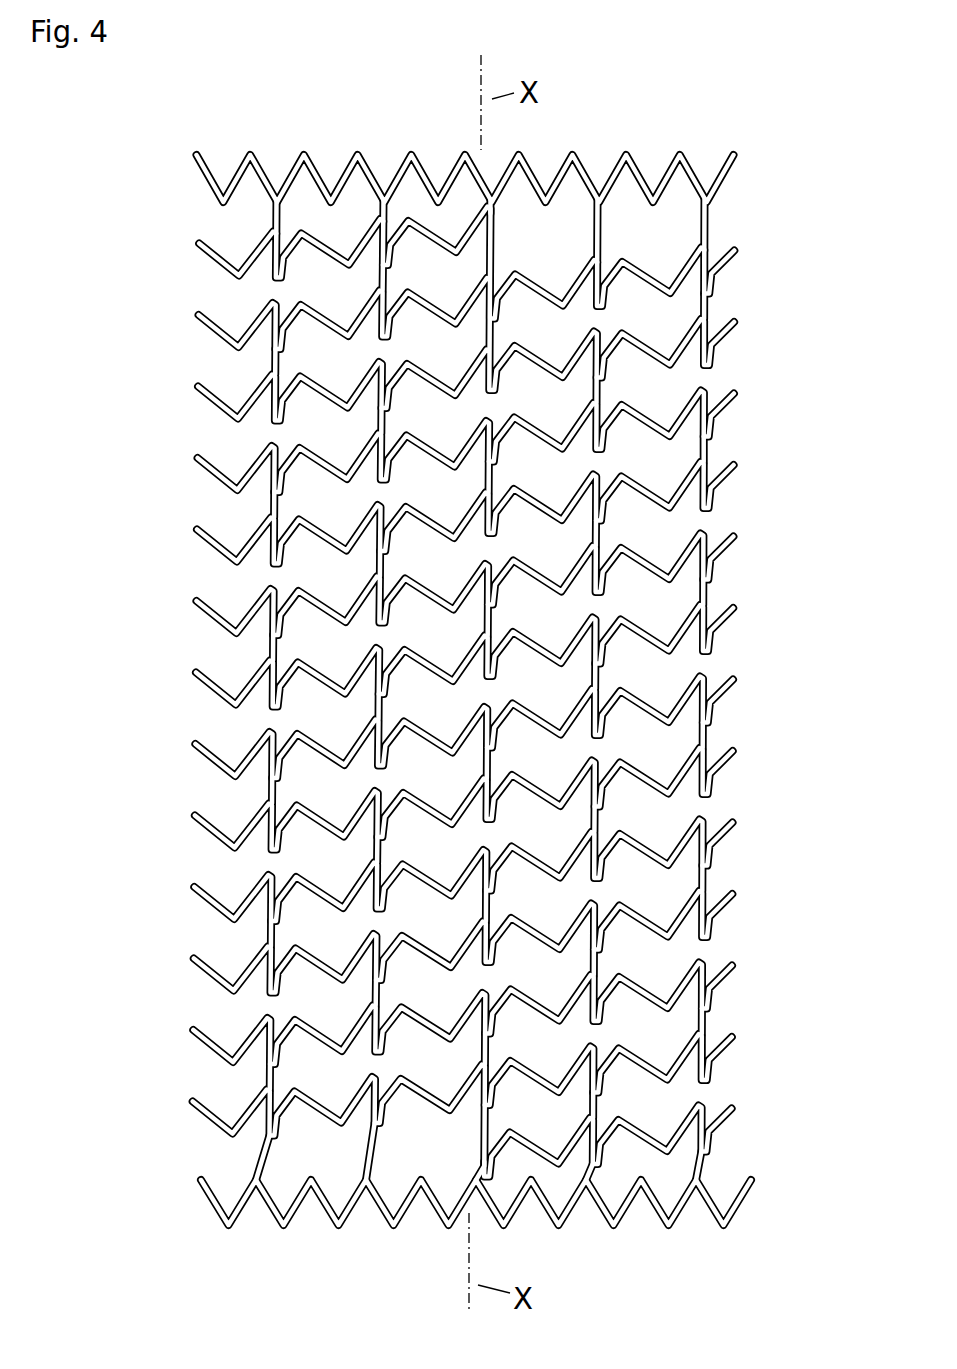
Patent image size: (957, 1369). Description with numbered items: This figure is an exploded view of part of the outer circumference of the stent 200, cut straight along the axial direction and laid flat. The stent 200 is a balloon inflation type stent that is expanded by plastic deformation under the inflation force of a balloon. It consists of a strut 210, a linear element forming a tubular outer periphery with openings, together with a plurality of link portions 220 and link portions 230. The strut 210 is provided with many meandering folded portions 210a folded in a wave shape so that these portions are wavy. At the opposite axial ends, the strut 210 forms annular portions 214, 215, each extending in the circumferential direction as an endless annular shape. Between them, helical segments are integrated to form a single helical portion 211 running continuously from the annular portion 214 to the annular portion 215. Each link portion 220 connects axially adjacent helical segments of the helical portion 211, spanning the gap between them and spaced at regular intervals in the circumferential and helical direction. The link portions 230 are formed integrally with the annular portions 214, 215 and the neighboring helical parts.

The stent 200 is at (120, 118).
The strut 210 is at (120, 264).
The meandering folded portion 210a is at (535, 448).
The helical portion 211 is at (469, 692).
The annular portion 214 is at (210, 181).
The annular portion 215 is at (211, 1202).
The link portion 220 is at (277, 369).
The link portion 230 is at (381, 210).